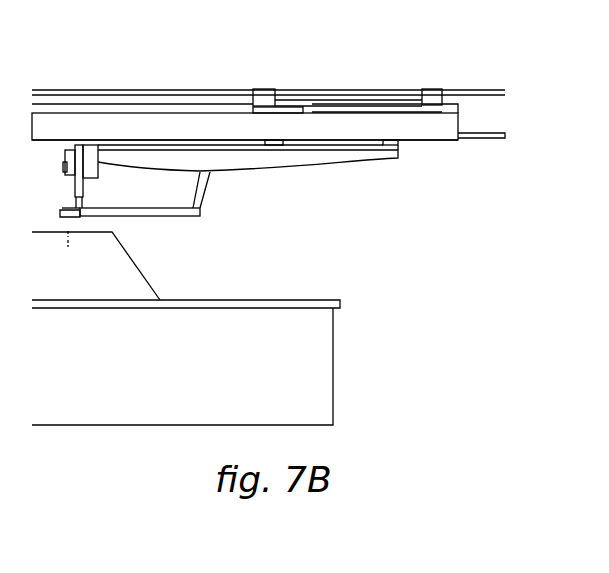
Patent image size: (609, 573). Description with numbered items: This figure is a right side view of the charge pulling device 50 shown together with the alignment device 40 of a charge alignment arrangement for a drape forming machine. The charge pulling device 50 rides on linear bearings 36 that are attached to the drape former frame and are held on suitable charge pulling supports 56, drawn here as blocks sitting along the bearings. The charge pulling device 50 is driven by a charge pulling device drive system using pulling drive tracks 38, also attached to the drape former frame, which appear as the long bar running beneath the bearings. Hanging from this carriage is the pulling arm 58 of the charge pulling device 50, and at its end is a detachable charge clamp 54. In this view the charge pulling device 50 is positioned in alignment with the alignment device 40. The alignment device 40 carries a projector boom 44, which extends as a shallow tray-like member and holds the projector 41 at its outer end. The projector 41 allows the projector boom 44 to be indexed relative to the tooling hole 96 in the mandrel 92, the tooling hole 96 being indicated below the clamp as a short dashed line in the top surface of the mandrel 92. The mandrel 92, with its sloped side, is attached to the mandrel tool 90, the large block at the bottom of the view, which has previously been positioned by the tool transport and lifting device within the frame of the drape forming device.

The linear bearings 36 is at (505, 93).
The charge pulling supports 56 is at (263, 89).
The pulling drive tracks 38 is at (430, 130).
The alignment device 40 is at (106, 169).
The projector 41 is at (64, 158).
The projector boom 44 is at (232, 173).
The pulling arm 58 is at (205, 197).
The detachable charge clamp 54 is at (68, 210).
The charge pulling device 50 is at (198, 230).
The tooling hole 96 is at (72, 252).
The mandrel 92 is at (137, 262).
The mandrel tool 90 is at (347, 360).